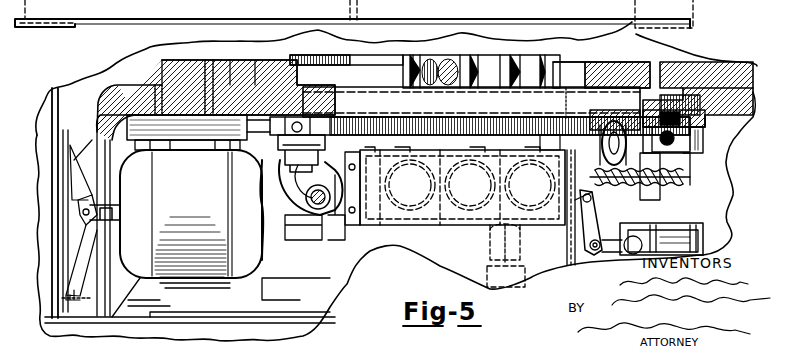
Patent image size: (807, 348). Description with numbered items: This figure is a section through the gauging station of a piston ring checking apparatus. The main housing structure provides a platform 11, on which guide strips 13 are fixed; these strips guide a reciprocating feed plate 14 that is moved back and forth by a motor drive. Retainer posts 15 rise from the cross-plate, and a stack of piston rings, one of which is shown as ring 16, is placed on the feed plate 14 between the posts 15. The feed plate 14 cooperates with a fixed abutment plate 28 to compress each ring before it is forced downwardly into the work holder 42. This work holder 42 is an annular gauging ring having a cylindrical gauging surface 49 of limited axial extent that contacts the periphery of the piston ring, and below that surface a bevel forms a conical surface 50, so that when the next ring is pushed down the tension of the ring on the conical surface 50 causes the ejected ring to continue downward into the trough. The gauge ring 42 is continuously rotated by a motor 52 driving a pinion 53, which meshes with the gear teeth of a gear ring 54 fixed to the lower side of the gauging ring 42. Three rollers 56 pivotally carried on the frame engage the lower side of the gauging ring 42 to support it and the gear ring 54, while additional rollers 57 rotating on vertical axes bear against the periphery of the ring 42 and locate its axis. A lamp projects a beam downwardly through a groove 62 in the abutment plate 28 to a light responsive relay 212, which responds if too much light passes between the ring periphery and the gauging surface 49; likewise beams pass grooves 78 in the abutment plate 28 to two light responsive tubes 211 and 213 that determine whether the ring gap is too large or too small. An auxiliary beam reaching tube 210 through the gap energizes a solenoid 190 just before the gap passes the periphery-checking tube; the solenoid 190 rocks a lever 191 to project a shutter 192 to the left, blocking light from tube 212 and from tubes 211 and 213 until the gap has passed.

The platform 11 is at (753, 112).
The guide strips 13 is at (220, 62).
The feed plate 14 is at (296, 57).
The retainer posts 15 is at (328, 26).
The piston ring 16 is at (566, 88).
The abutment plate 28 is at (640, 62).
The work holder 42 is at (549, 142).
The cylindrical gauging surface 49 is at (548, 108).
The conical surface 50 is at (577, 142).
The motor 52 is at (258, 280).
The pinion 53 is at (266, 158).
The gear ring 54 is at (442, 122).
The rollers 56 is at (334, 170).
The rollers 57 is at (692, 72).
The groove 62 is at (480, 52).
The grooves 78 is at (420, 58).
The solenoid 190 is at (670, 226).
The lever 191 is at (596, 222).
The shutter 192 is at (418, 147).
The tube 210 is at (490, 247).
The light responsive tube 211 is at (542, 210).
The light responsive relay 212 is at (476, 210).
The light responsive tube 213 is at (416, 210).